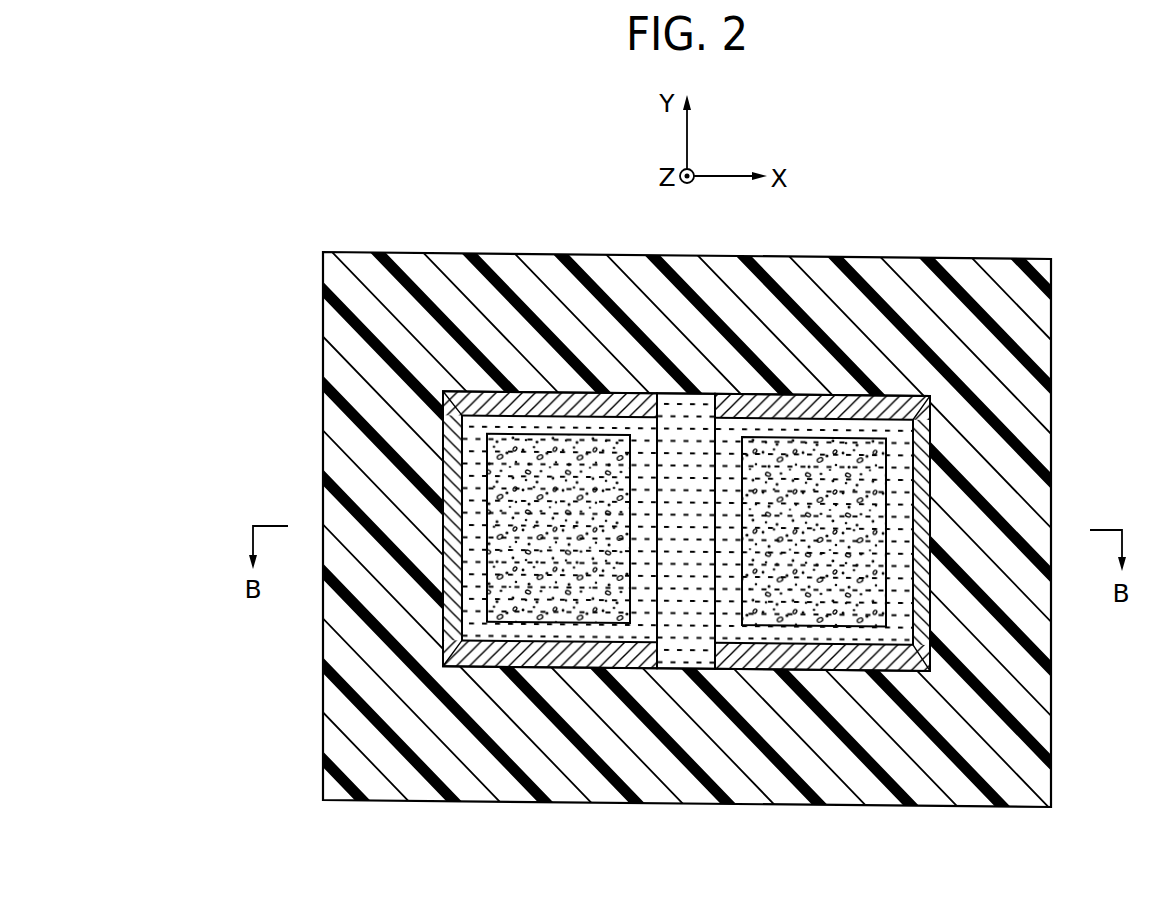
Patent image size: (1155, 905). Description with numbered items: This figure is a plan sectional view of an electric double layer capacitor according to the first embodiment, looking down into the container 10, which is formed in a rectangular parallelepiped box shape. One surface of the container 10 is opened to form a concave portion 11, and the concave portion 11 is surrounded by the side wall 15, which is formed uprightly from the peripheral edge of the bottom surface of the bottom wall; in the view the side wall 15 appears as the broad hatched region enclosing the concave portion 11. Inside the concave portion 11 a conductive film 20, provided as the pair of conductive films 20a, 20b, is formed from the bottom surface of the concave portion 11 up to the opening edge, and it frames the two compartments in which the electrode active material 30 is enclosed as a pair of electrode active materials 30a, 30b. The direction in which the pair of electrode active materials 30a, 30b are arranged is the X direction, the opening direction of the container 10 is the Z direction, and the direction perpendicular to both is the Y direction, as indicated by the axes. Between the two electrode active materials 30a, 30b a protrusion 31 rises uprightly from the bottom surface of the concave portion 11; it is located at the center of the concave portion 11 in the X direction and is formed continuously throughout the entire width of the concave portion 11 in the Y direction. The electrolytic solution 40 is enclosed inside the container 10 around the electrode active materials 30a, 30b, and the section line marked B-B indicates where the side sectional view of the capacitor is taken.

The container 10 is at (312, 241).
The concave portion 11 is at (536, 406).
The side wall 15 is at (335, 365).
The conductive film 20 is at (421, 529).
The conductive film 20a is at (426, 464).
The conductive film 20b is at (950, 435).
The electrode active material 30 is at (558, 528).
The electrode active material 30a is at (604, 538).
The electrode active material 30b is at (793, 538).
The protrusion 31 is at (655, 430).
The electrolytic solution 40 is at (600, 624).